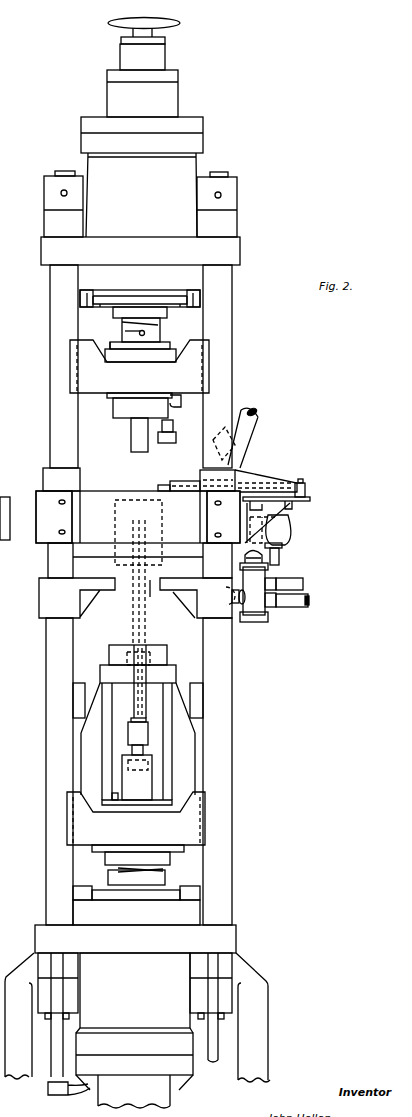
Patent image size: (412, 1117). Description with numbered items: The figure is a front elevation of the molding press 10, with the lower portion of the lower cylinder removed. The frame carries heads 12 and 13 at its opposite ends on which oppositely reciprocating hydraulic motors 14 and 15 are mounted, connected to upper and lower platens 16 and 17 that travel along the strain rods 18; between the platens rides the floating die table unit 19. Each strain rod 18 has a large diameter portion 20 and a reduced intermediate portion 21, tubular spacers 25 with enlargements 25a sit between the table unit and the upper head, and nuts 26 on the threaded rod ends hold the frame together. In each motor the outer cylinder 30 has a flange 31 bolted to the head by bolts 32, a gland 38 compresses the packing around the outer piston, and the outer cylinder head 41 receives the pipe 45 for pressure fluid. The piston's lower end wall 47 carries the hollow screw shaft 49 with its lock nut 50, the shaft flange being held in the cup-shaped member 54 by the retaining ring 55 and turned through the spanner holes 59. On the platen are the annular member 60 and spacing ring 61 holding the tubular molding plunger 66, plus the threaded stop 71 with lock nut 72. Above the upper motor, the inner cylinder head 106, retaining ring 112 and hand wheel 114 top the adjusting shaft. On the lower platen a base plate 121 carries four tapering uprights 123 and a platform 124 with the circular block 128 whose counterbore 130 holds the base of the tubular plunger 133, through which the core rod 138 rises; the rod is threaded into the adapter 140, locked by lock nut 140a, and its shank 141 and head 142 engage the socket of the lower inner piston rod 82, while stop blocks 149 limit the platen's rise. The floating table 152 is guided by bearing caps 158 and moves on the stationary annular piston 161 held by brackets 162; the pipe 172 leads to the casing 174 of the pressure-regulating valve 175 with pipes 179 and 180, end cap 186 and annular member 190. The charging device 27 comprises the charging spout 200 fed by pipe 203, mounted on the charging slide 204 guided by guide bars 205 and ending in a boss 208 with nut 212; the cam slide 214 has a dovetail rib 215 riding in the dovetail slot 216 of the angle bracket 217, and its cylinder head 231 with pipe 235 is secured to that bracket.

The molding press 10 is at (146, 595).
The upper press head 12 is at (241, 252).
The lower press head 13 is at (238, 938).
The upper hydraulic motor 14 is at (212, 143).
The lower hydraulic motor 15 is at (187, 1079).
The upper platen 16 is at (190, 368).
The lower platen 17 is at (188, 824).
The strain rods 18 is at (41, 646).
The floating die table unit 19 is at (120, 521).
The large diameter portion 20 is at (152, 758).
The intermediate diameter portion 21 is at (45, 568).
The tubular spacers 25 is at (50, 348).
The enlargements 25a is at (45, 466).
The nuts 26 is at (46, 193).
The die cavity charging device 27 is at (270, 505).
The outer cylinder 30 is at (178, 172).
The flange 31 is at (136, 598).
The bolts 32 is at (97, 305).
The annular gland 38 is at (120, 329).
The outer cylinder head 41 is at (168, 97).
The pipe 45 is at (68, 1099).
The lower end wall 47 is at (167, 313).
The hollow screw shaft 49 is at (160, 333).
The lock nut 50 is at (122, 326).
The cup-shaped member 54 is at (96, 852).
The retaining ring 55 is at (170, 346).
The holes 59 is at (114, 344).
The annular member 60 is at (116, 412).
The spacing ring 61 is at (110, 400).
The tubular molding plunger 66 is at (133, 440).
The threaded stop 71 is at (177, 437).
The lock nut 72 is at (184, 409).
The inner piston rod 82 is at (137, 777).
The inner cylinder head 106 is at (160, 58).
The retaining ring 112 is at (165, 41).
The hand wheel 114 is at (180, 23).
The rectangular base plate 121 is at (118, 806).
The uprights 123 is at (175, 755).
The platform 124 is at (138, 674).
The circular block 128 is at (168, 648).
The counterbore 130 is at (168, 660).
The lower outer tubular plunger 133 is at (133, 628).
The core rod 138 is at (140, 694).
The adapter 140 is at (145, 735).
The lock nut 140a is at (135, 718).
The shank 141 is at (130, 748).
The head 142 is at (128, 768).
The stop blocks 149 is at (79, 685).
The floating table 152 is at (96, 496).
The bearing caps 158 is at (36, 560).
The annular piston 161 is at (156, 593).
The brackets 162 is at (80, 596).
The pipe 172 is at (223, 599).
The casing 174 is at (257, 591).
The pressure-regulating valve 175 is at (300, 598).
The pipe 179 is at (303, 584).
The pipe 180 is at (309, 600).
The end cap 186 is at (266, 622).
The annular member 190 is at (266, 569).
The charging spout 200 is at (204, 472).
The pipe 203 is at (260, 418).
The charging slide 204 is at (277, 482).
The guide bars 205 is at (180, 481).
The boss 208 is at (306, 490).
The nut 212 is at (304, 481).
The cam slide 214 is at (310, 500).
The dovetail rib 215 is at (290, 528).
The dovetail slot 216 is at (292, 505).
The angle bracket 217 is at (292, 514).
The cylinder head 231 is at (280, 545).
The pipe 235 is at (279, 560).